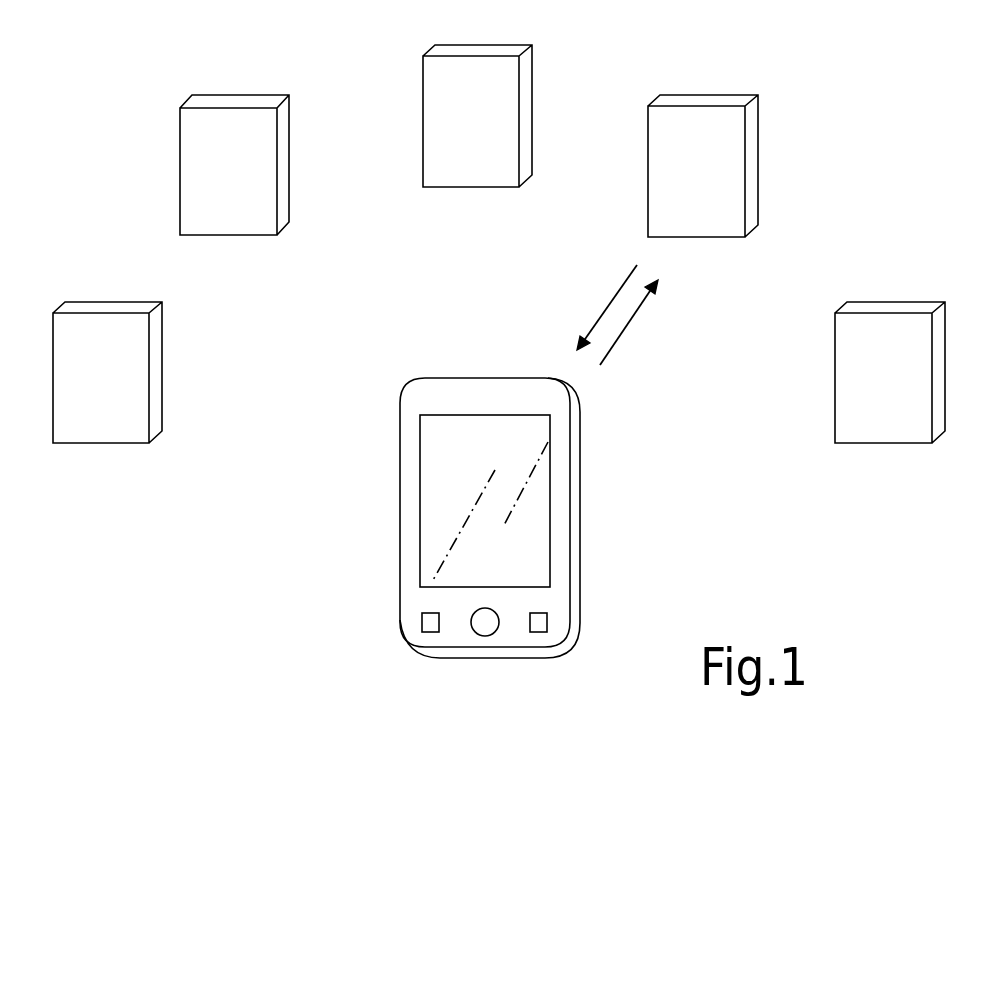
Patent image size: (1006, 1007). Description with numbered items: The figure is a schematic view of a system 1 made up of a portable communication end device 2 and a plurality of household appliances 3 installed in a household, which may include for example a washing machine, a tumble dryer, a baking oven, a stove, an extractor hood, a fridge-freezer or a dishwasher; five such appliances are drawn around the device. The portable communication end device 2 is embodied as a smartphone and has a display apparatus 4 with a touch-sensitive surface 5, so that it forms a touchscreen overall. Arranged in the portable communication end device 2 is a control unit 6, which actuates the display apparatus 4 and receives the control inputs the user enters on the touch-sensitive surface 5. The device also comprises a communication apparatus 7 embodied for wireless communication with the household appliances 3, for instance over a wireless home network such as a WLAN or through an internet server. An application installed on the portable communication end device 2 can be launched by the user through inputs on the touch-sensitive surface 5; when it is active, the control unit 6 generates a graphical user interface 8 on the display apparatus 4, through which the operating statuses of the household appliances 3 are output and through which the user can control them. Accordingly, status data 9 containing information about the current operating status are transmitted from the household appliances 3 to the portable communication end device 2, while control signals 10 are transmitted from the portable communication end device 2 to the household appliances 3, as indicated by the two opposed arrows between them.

The system 1 is at (76, 128).
The portable communication end device 2 is at (483, 378).
The household appliances 3 is at (282, 163).
The display apparatus 4 is at (550, 432).
The touch-sensitive surface 5 is at (523, 547).
The control unit 6 is at (422, 623).
The communication apparatus 7 is at (547, 623).
The graphical user interface 8 is at (450, 475).
The status data 9 is at (610, 310).
The control signals 10 is at (630, 325).